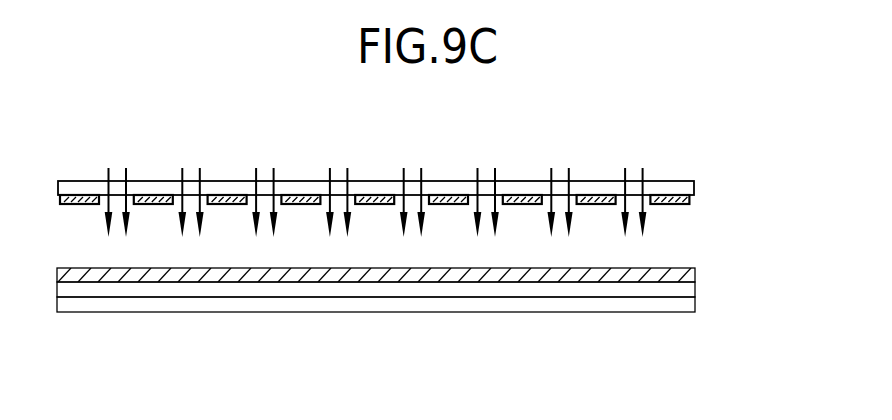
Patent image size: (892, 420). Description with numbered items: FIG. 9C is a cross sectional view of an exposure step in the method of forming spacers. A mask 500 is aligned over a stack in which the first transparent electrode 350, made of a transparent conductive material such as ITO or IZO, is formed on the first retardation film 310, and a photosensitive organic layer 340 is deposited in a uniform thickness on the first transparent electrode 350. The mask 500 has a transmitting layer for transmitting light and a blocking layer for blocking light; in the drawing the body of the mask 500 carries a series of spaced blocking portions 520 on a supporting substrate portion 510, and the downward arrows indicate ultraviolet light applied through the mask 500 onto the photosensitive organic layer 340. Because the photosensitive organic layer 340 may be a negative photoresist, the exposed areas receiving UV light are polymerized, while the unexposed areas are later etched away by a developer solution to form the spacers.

The mask 500 is at (437, 196).
The mask substrate 510 is at (647, 203).
The light blocking pattern 520 is at (695, 200).
The photosensitive organic layer 340 is at (695, 275).
The first transparent electrode 350 is at (695, 290).
The first retardation film 310 is at (695, 304).